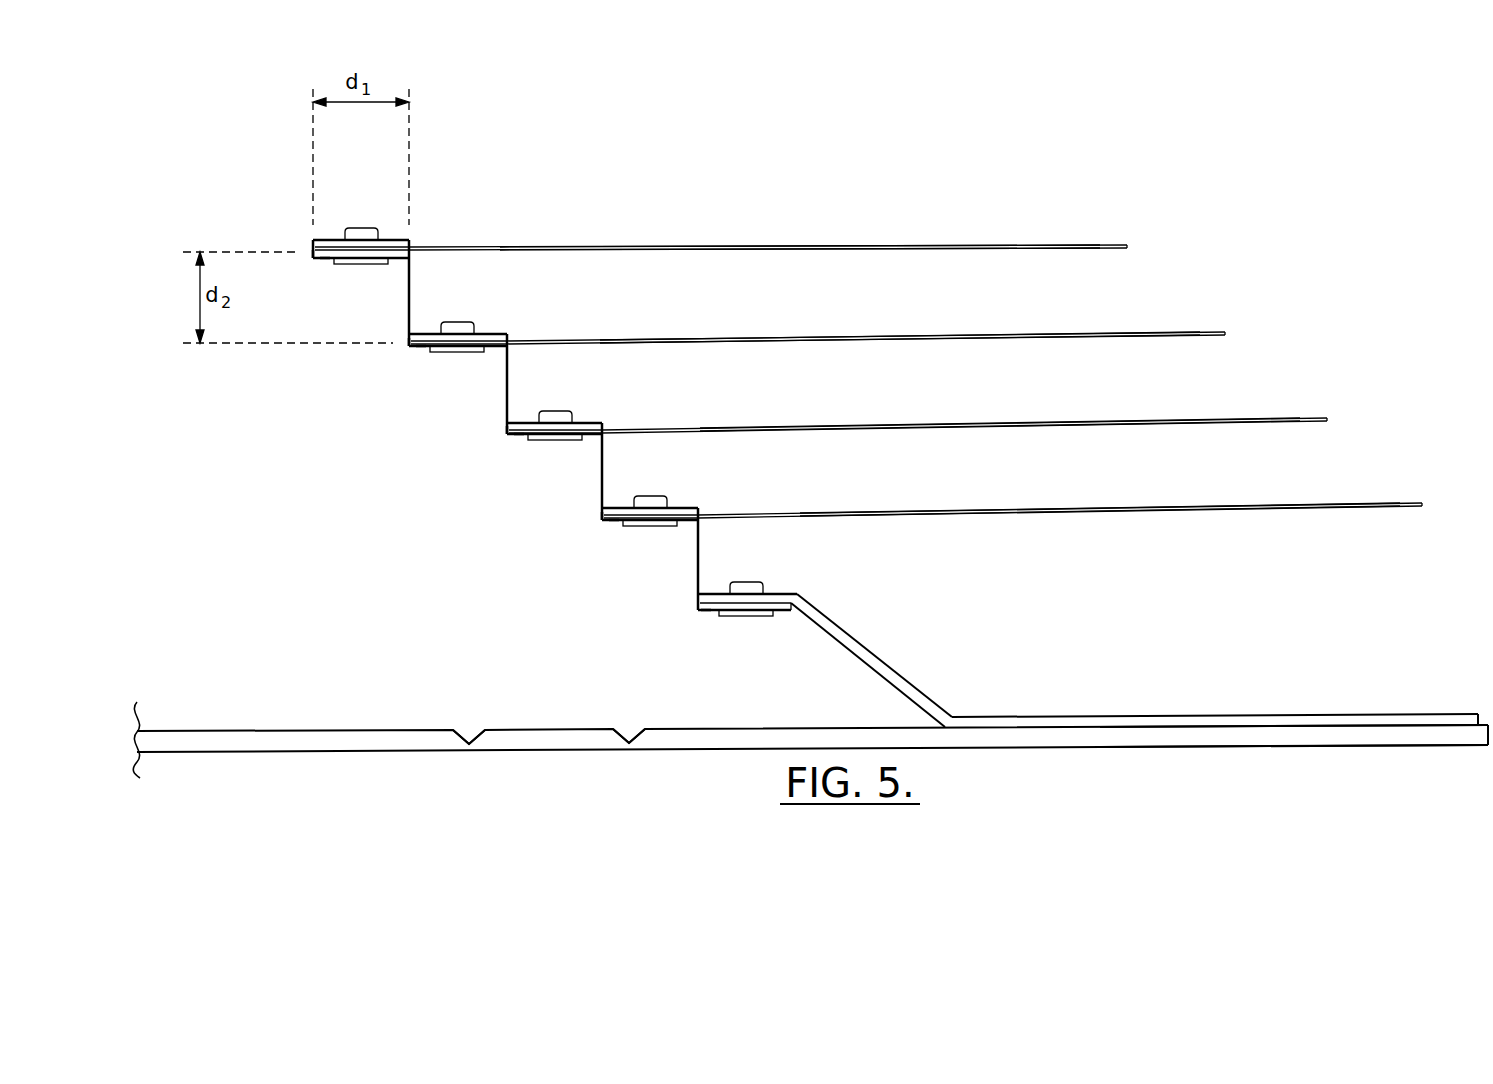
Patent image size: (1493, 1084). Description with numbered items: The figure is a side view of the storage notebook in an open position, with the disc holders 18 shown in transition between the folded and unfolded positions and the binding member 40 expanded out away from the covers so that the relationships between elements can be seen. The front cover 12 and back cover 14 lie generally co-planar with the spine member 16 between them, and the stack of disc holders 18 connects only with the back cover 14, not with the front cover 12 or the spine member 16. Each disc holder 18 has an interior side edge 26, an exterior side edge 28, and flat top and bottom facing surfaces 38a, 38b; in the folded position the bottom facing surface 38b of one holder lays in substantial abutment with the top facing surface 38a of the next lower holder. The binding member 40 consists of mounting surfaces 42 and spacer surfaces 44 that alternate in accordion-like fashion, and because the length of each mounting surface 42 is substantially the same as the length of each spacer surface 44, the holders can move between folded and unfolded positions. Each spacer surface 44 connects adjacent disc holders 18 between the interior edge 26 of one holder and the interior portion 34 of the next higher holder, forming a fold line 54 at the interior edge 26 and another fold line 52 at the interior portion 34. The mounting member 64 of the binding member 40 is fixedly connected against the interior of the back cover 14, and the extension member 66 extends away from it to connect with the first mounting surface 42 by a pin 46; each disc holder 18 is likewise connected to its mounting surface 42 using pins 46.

The front cover 12 is at (810, 756).
The back cover 14 is at (1294, 766).
The spine member 16 is at (549, 764).
The disc holder 18 is at (915, 358).
The interior side edge 26 is at (471, 359).
The exterior side edge 28 is at (1306, 353).
The interior portion 34 is at (410, 245).
The top facing surface 38a is at (950, 357).
The bottom facing surface 38b is at (950, 396).
The binding member 40 is at (285, 516).
The mounting surface 42 is at (475, 467).
The spacer surface 44 is at (410, 301).
The pin 46 is at (475, 325).
The fold line 52 is at (410, 258).
The fold line 54 is at (399, 453).
The mounting member 64 is at (1215, 699).
The extension member 66 is at (825, 660).